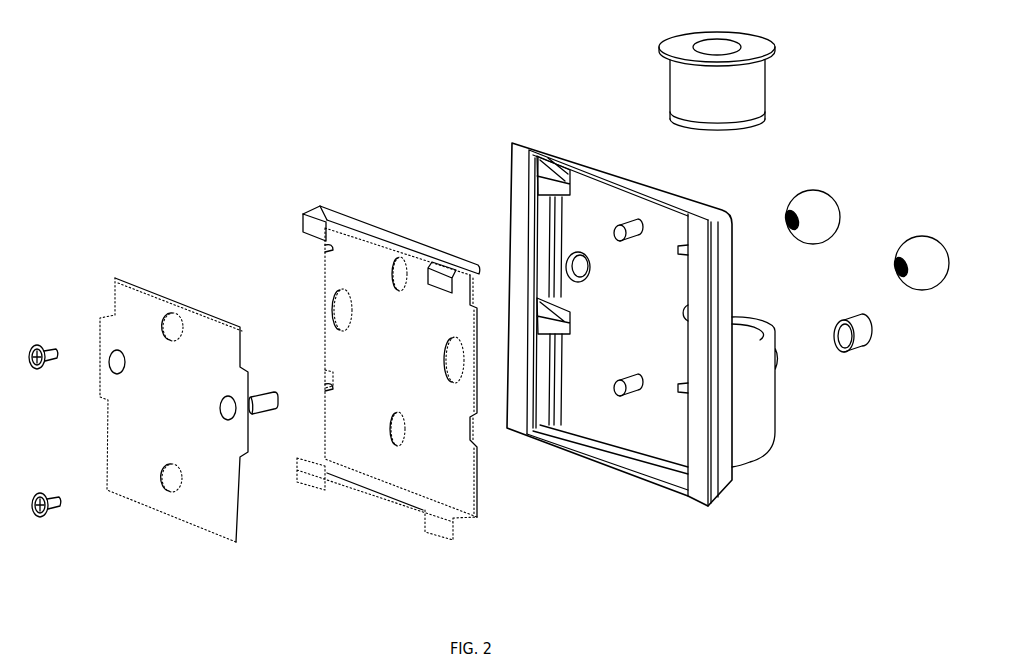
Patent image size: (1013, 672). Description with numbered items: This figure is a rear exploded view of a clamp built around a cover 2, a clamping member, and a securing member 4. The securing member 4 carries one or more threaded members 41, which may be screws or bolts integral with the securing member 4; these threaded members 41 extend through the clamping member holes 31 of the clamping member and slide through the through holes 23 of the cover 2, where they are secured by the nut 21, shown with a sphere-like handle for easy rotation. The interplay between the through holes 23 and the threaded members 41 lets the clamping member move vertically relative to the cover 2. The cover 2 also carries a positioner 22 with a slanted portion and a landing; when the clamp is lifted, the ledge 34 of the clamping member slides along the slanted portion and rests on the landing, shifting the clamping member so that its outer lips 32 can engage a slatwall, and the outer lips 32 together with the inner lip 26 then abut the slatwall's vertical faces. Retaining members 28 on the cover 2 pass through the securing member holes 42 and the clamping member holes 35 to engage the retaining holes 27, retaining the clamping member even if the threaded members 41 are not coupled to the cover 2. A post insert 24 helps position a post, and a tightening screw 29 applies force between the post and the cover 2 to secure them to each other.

The cover 2 is at (680, 347).
The securing member 4 is at (140, 287).
The nut 21 is at (920, 238).
The positioner 22 is at (573, 178).
The through holes 23 is at (688, 313).
The post insert 24 is at (765, 88).
The inner lip 26 is at (697, 490).
The retaining holes 27 is at (627, 222).
The retaining members 28 is at (37, 369).
The tightening screw 29 is at (873, 343).
The clamping member holes 31 is at (348, 313).
The outer lips 32 is at (305, 222).
The ledge 34 is at (330, 373).
The clamping member holes 35 is at (400, 263).
The threaded members 41 is at (263, 410).
The securing member holes 42 is at (173, 312).